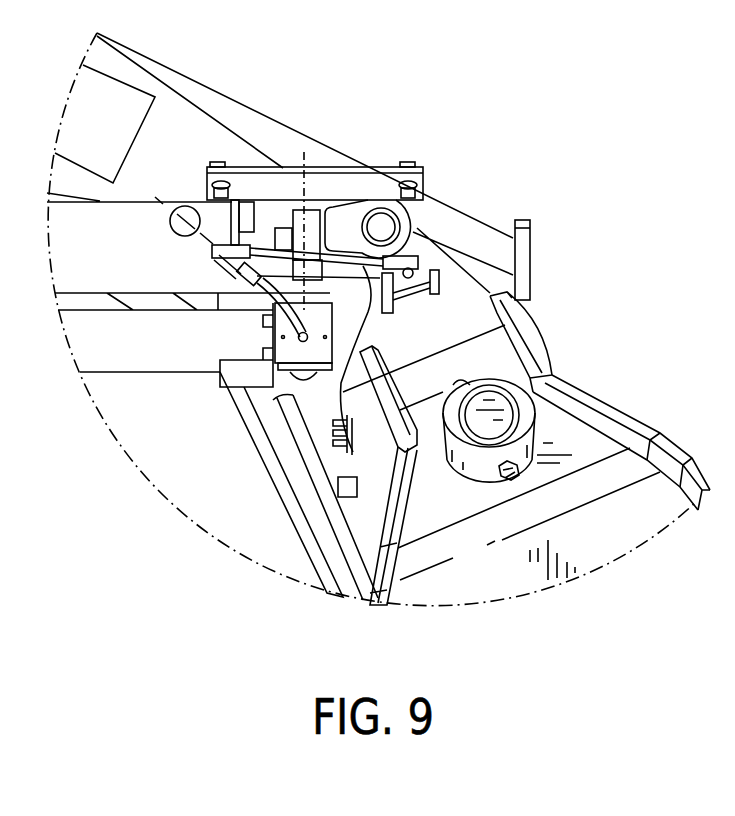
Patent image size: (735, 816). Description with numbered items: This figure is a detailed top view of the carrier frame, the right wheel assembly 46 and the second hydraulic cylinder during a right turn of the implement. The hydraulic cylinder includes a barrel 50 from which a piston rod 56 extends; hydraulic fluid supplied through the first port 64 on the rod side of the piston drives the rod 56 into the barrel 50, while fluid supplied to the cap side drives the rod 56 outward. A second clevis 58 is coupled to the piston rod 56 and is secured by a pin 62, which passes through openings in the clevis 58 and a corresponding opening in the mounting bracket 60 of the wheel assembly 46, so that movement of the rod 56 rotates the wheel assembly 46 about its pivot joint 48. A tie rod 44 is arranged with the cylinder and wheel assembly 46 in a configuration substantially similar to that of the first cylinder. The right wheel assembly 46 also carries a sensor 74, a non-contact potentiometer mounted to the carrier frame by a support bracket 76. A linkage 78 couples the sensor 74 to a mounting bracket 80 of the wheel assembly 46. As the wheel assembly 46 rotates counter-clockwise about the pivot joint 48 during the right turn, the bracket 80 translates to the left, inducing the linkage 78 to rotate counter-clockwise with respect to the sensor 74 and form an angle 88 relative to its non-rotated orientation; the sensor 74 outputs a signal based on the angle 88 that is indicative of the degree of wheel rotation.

The tie rod 44 is at (110, 357).
The wheel assembly 46 is at (568, 438).
The pivot joint 48 is at (487, 423).
The barrel 50 is at (137, 215).
The piston rod 56 is at (268, 283).
The second clevis 58 is at (343, 227).
The mounting bracket 60 is at (450, 295).
The pin 62 is at (381, 227).
The first port 64 is at (173, 227).
The sensor 74 is at (287, 355).
The support bracket 76 is at (322, 395).
The linkage 78 is at (313, 205).
The mounting bracket 80 is at (381, 300).
The angle 88 is at (265, 272).